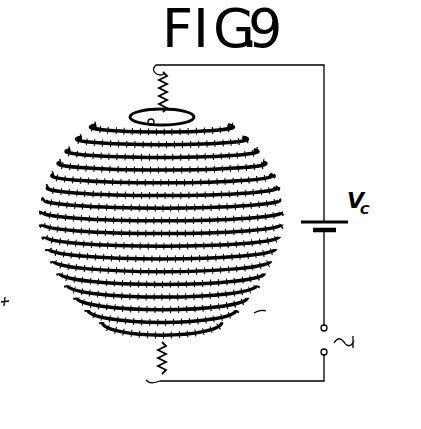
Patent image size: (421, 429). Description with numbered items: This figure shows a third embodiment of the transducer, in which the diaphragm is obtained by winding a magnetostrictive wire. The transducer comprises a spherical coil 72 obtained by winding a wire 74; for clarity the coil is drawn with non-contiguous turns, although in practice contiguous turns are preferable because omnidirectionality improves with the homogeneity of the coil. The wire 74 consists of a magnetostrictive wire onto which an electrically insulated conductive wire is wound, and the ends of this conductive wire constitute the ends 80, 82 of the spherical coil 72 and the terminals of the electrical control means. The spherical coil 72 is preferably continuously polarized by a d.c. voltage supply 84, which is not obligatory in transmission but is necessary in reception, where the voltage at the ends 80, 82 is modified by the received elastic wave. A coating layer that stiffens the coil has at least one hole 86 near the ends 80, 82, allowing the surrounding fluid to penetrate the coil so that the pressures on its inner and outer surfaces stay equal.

The spherical coil 72 is at (281, 140).
The wire 74 is at (86, 311).
The end of the spherical coil 80 is at (155, 70).
The end of the spherical coil 82 is at (123, 365).
The d.c. voltage supply 84 is at (333, 241).
The hole 86 is at (140, 112).